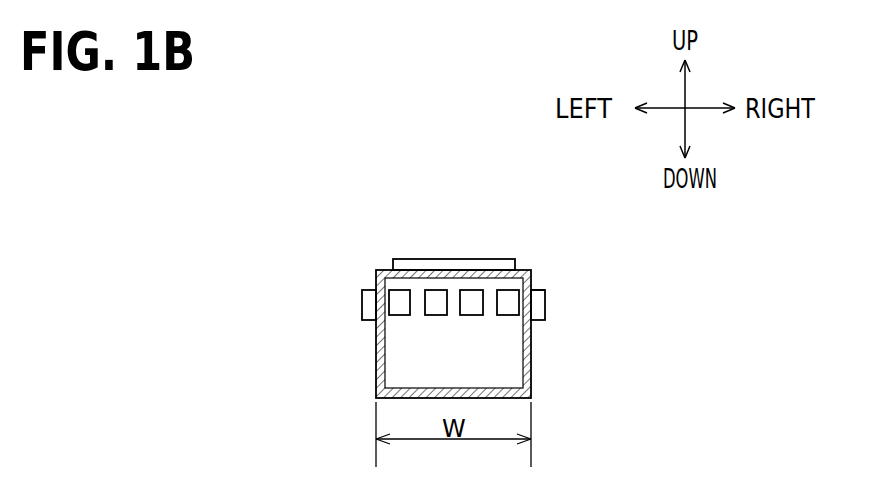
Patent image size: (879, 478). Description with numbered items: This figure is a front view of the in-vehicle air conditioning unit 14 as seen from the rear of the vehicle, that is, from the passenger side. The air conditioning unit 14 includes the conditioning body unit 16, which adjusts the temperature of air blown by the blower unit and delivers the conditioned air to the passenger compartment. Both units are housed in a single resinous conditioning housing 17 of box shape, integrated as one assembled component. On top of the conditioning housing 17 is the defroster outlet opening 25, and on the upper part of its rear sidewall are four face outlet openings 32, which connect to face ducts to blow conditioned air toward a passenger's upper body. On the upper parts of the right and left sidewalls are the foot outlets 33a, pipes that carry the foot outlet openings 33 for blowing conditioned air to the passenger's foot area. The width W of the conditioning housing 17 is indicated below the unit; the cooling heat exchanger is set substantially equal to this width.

The in-vehicle air conditioning unit 14 is at (518, 253).
The conditioning body unit 16 is at (485, 350).
The conditioning housing 17 is at (533, 365).
The defroster outlet opening 25 is at (488, 259).
The face outlet openings 32 is at (475, 298).
The foot outlet openings 33 is at (362, 302).
The foot outlets 33a is at (537, 291).